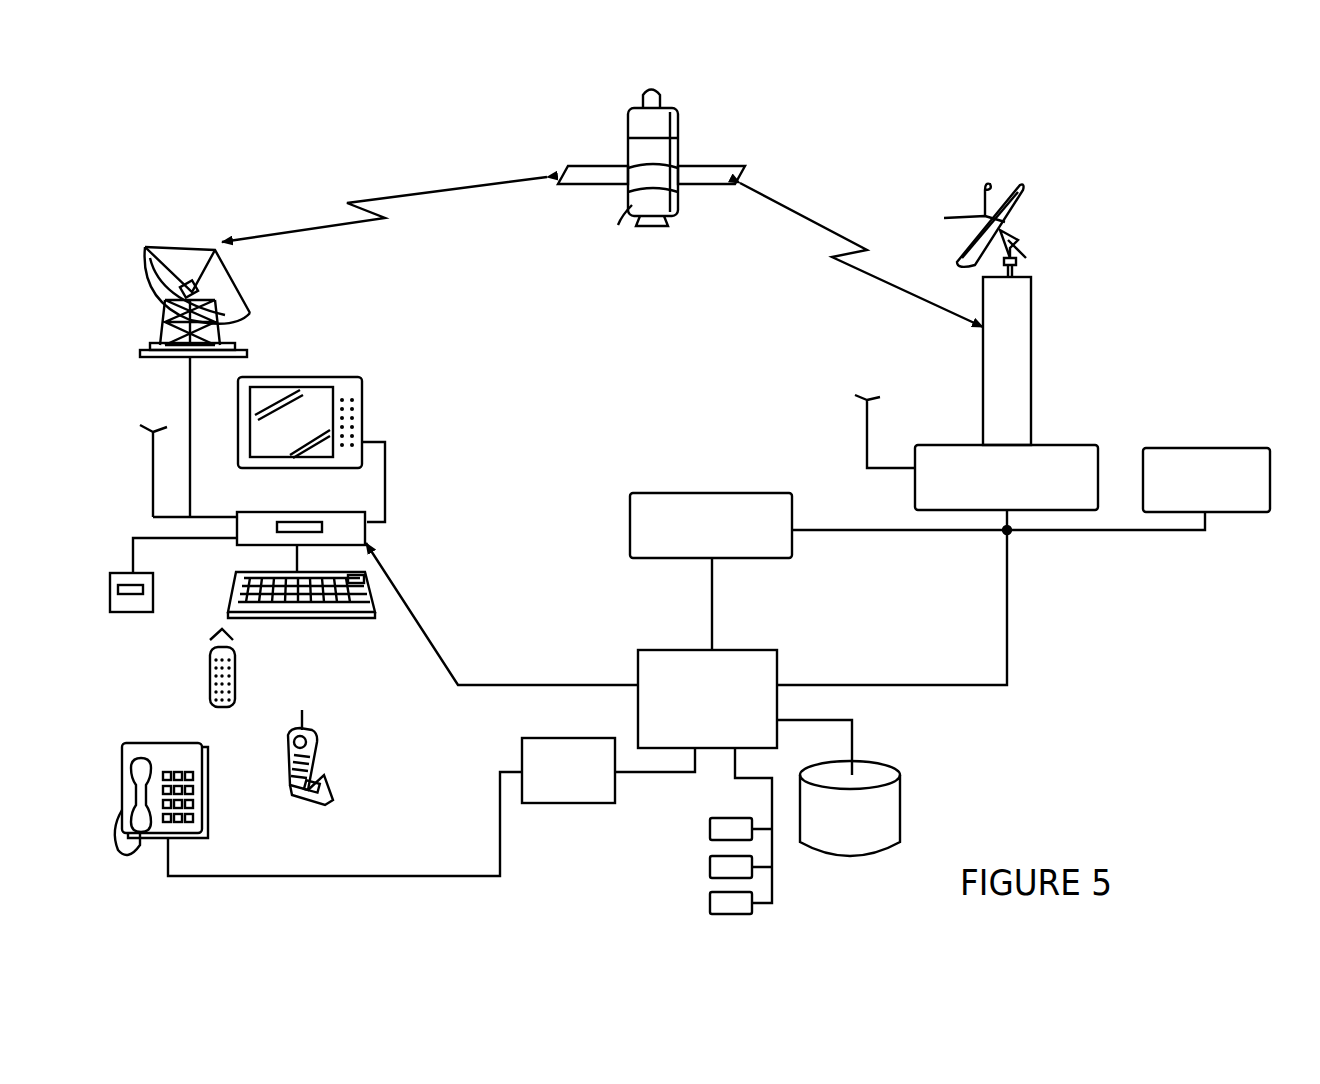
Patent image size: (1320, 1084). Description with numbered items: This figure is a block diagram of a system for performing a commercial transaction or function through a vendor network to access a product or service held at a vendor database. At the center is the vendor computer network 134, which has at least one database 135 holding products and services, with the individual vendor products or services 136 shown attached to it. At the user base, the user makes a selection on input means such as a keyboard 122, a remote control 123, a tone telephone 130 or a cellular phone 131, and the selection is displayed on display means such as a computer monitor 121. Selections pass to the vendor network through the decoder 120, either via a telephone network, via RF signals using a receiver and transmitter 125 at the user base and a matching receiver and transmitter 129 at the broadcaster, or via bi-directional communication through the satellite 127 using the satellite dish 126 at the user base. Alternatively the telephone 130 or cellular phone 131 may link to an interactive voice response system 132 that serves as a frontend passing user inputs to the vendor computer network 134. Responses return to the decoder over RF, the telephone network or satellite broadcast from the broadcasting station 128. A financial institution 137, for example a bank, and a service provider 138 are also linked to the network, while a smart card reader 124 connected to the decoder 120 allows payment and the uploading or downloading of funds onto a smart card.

The decoder 120 is at (368, 533).
The computer monitor 121 is at (312, 408).
The keyboard 122 is at (312, 608).
The remote control 123 is at (236, 675).
The smart card reader 124 is at (153, 592).
The receiver and transmitter 125 is at (148, 430).
The satellite dish 126 is at (165, 258).
The satellite 127 is at (651, 173).
The broadcasting station 128 is at (1100, 455).
The receiver and transmitter 129 is at (878, 410).
The tone telephone 130 is at (208, 808).
The cellular phone 131 is at (318, 775).
The interactive voice response system 132 is at (588, 803).
The vendor computer network 134 is at (779, 653).
The database 135 is at (885, 772).
The vendor product or service 136 is at (710, 903).
The financial institution 137 is at (708, 492).
The service provider 138 is at (1268, 465).